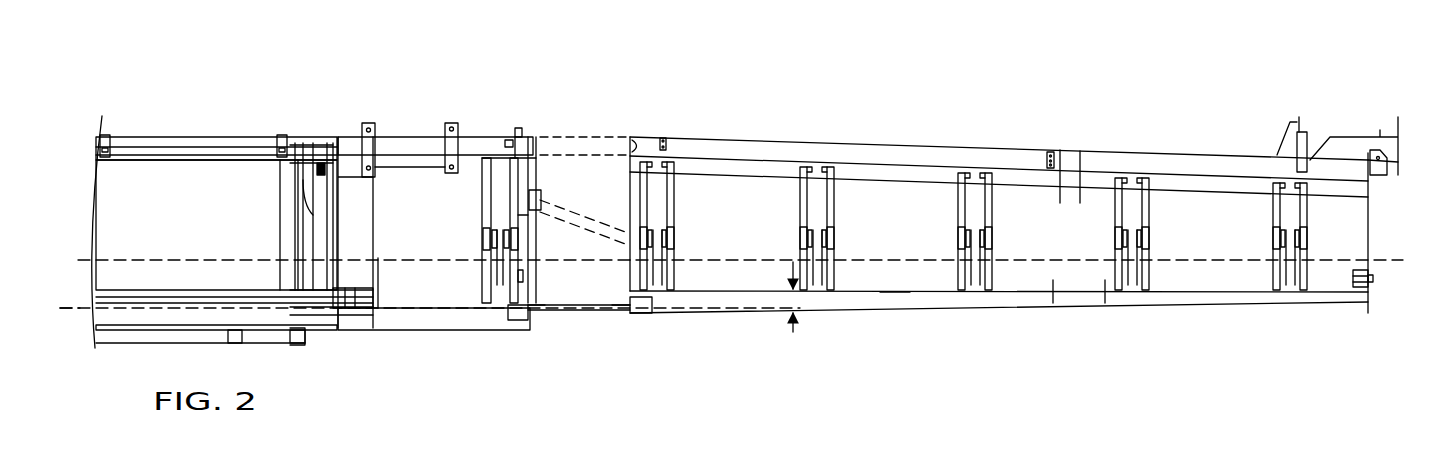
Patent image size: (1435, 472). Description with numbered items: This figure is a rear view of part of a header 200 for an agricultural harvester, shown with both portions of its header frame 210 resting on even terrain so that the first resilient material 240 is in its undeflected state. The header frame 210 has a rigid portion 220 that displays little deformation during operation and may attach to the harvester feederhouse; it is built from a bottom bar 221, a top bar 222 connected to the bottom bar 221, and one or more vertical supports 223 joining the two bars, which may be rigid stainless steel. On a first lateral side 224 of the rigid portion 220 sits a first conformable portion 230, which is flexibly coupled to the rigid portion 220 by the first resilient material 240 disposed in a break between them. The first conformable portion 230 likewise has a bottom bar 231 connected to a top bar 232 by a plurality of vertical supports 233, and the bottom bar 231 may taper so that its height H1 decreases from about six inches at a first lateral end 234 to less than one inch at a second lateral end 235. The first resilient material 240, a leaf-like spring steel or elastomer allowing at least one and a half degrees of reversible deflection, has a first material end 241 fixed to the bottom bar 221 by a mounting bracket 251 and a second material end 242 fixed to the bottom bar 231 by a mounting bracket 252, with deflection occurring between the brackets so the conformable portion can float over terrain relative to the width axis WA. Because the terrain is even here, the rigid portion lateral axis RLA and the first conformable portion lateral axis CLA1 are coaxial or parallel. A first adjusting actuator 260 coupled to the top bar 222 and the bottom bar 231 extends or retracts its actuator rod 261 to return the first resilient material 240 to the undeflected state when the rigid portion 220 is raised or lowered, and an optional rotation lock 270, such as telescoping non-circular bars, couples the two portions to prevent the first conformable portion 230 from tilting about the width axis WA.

The header 200 is at (760, 86).
The header frame 210 is at (600, 104).
The rigid portion 220 is at (410, 125).
The bottom bar 221 is at (402, 320).
The top bar 222 is at (392, 143).
The vertical supports 223 is at (513, 193).
The first lateral side 224 is at (522, 217).
The first conformable portion 230 is at (920, 138).
The bottom bar 231 is at (845, 300).
The top bar 232 is at (1030, 148).
The vertical supports 233 is at (960, 210).
The first lateral end 234 is at (632, 292).
The second lateral end 235 is at (1372, 300).
The first resilient material 240 is at (582, 312).
The first material end 241 is at (537, 308).
The second material end 242 is at (620, 310).
The mounting bracket 251 is at (520, 310).
The mounting bracket 252 is at (641, 312).
The first adjusting actuator 260 is at (535, 188).
The actuator rod 261 is at (560, 207).
The rotation lock 270 is at (582, 137).
The rigid portion lateral axis RLA is at (215, 258).
The width axis WA is at (93, 308).
The height H1 is at (792, 330).
The first conformable portion lateral axis CLA1 is at (893, 293).